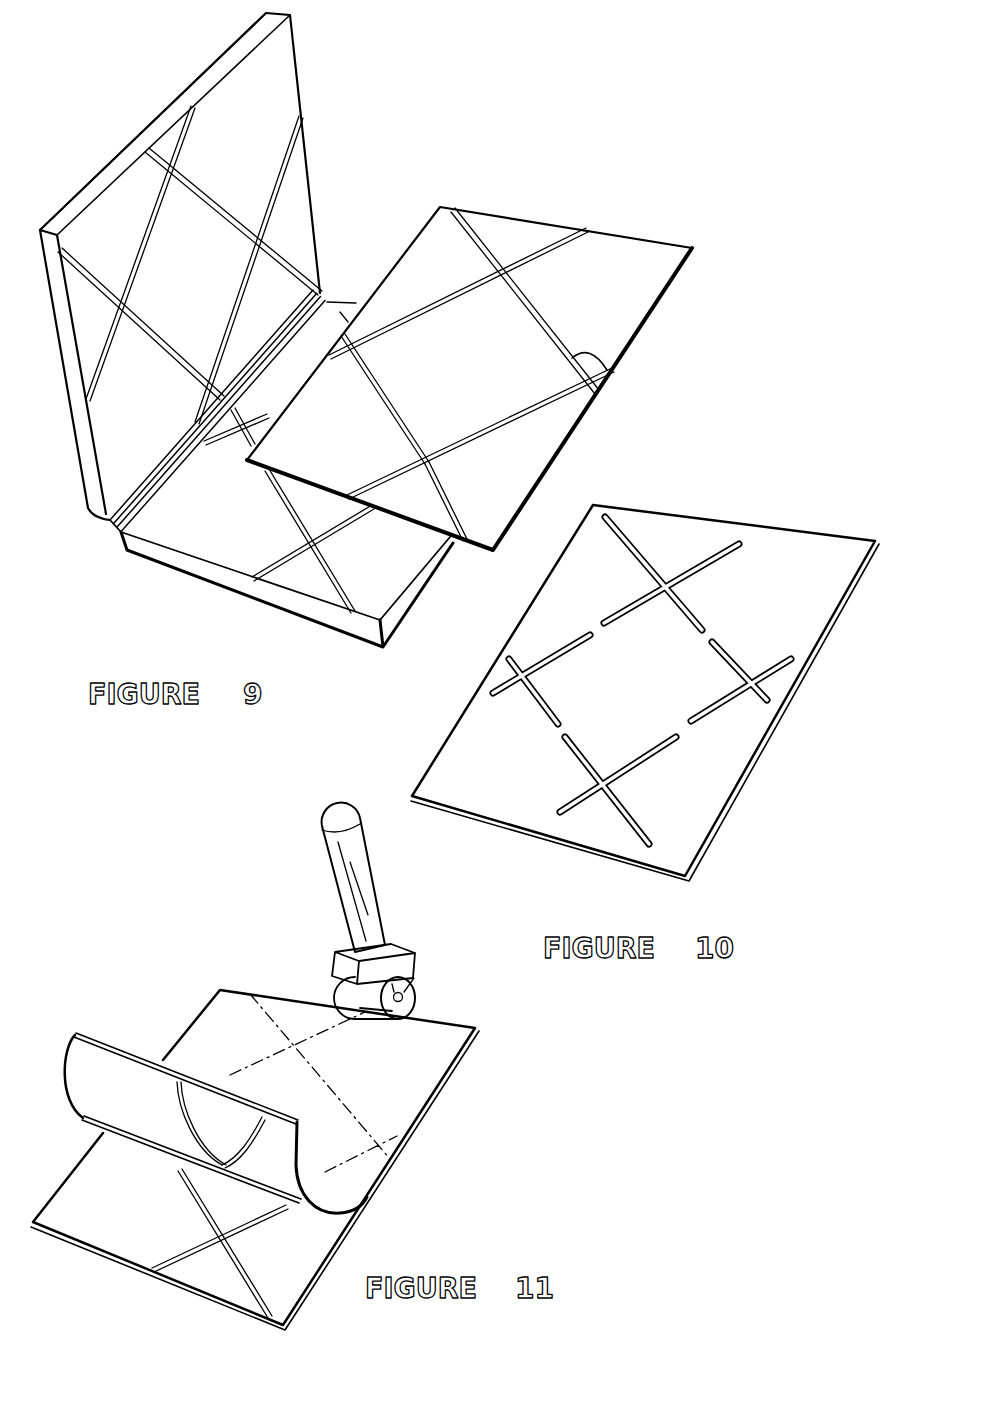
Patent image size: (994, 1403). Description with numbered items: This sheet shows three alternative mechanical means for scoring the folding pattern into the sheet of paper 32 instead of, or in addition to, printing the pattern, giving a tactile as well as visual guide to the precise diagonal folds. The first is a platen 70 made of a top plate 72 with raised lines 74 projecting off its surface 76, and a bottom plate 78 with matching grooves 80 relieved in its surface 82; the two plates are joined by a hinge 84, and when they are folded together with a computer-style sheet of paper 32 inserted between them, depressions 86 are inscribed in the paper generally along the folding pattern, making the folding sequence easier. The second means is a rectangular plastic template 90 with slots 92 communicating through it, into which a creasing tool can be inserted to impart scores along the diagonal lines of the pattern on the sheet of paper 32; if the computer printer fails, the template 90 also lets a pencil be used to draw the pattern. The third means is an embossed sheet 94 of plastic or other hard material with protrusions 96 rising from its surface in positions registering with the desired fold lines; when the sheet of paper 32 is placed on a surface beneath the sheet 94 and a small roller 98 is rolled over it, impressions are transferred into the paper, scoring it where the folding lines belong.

In FIG. 9, the platen 70 is at (246, 332).
In FIG. 9, the top plate 72 is at (298, 48).
In FIG. 9, the raised lines 74 is at (305, 118).
In FIG. 9, the surface 76 is at (232, 107).
In FIG. 9, the bottom plate 78 is at (172, 557).
In FIG. 9, the grooves 80 is at (333, 587).
In FIG. 9, the surface 82 is at (230, 523).
In FIG. 9, the hinge 84 is at (112, 527).
In FIG. 9, the sheet of paper 32 is at (637, 252).
In FIG. 11, the sheet of paper 32 is at (134, 1219).
In FIG. 9, the depressions 86 is at (612, 366).
In FIG. 10, the plastic template 90 is at (800, 515).
In FIG. 10, the slots 92 is at (709, 559).
In FIG. 11, the embossed sheet 94 is at (220, 1017).
In FIG. 11, the protrusions 96 is at (187, 1115).
In FIG. 11, the roller 98 is at (372, 889).